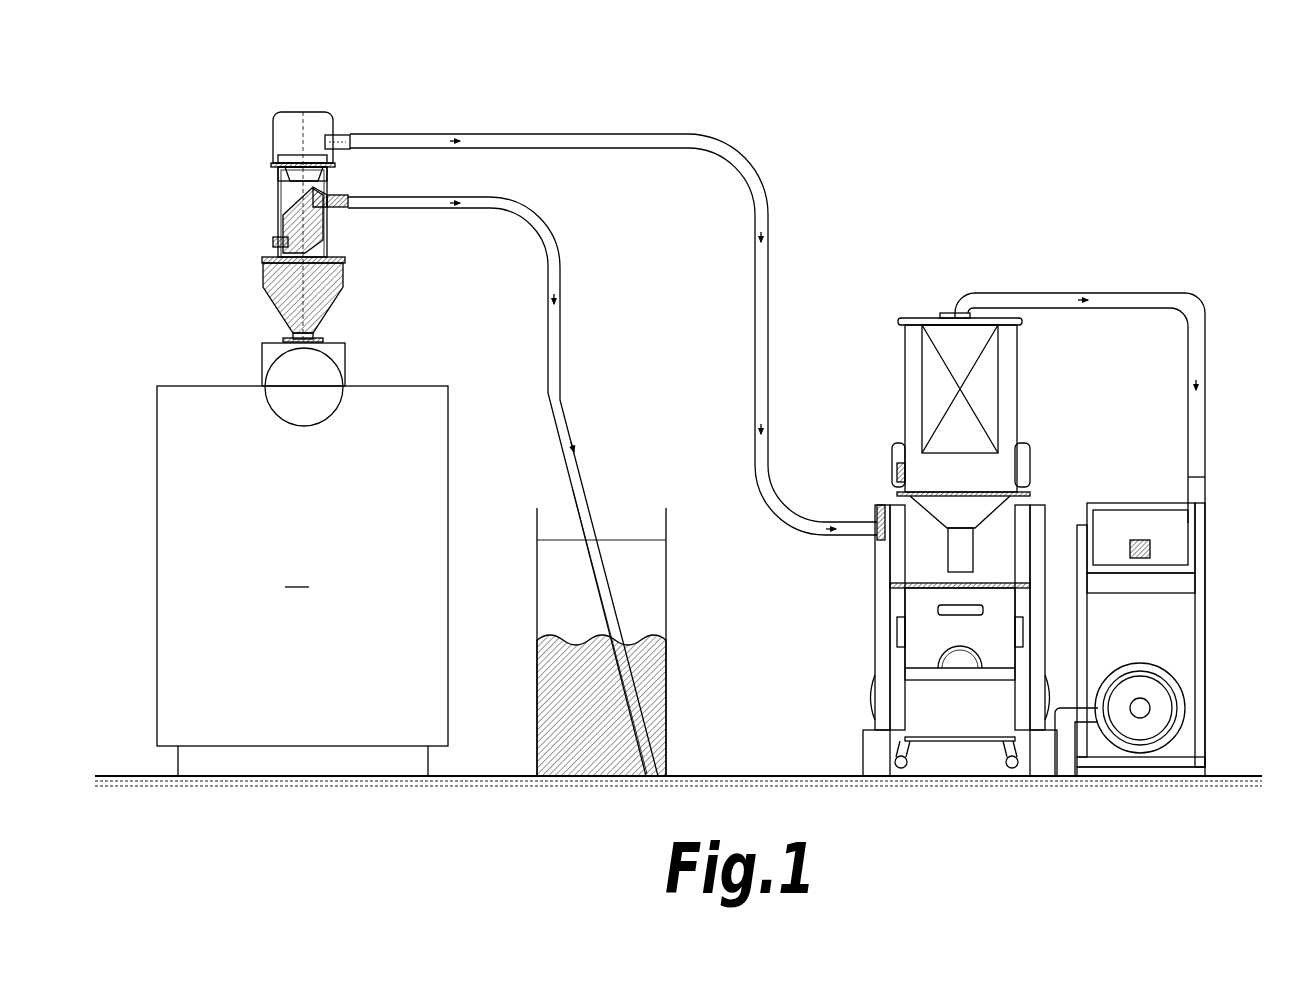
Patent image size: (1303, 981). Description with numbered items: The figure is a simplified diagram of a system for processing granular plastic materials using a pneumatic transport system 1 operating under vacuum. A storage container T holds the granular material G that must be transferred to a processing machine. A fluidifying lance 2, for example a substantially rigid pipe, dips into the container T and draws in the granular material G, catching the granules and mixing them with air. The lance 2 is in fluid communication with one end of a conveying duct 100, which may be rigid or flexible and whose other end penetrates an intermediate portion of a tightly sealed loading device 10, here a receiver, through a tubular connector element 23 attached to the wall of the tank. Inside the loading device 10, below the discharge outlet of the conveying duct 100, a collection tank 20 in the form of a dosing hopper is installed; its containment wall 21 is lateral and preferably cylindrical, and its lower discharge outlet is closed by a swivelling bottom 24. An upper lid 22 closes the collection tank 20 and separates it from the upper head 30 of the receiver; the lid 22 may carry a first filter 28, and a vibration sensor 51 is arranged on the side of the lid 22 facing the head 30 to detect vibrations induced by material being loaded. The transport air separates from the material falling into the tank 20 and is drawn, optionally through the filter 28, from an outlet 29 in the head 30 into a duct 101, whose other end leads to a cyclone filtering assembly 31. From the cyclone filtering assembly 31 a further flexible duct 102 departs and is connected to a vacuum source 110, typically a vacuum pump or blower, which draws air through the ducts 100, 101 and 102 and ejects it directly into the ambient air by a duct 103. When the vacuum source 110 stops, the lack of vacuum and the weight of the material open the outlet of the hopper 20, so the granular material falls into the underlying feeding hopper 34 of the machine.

The pneumatic transport system 1 is at (667, 450).
The loading device 10 is at (185, 183).
The head 30 is at (293, 110).
The upper lid 22 is at (303, 160).
The sensor 51 is at (287, 157).
The outlet 29 is at (340, 135).
The first filter 28 is at (278, 175).
The containment wall 21 is at (278, 200).
The inlet connection 23 is at (342, 197).
The collection tank 20 is at (317, 228).
The bottom 24 is at (275, 250).
The feeding hopper 34 is at (340, 283).
The duct 101 is at (714, 134).
The conveying duct 100 is at (565, 405).
The storage container T is at (685, 690).
The granular material G is at (557, 712).
The fluidifying lance 2 is at (617, 610).
The cyclone filtering assembly 31 is at (903, 395).
The flexible duct 102 is at (1100, 292).
The vacuum source 110 is at (1158, 666).
The duct 103 is at (1070, 777).